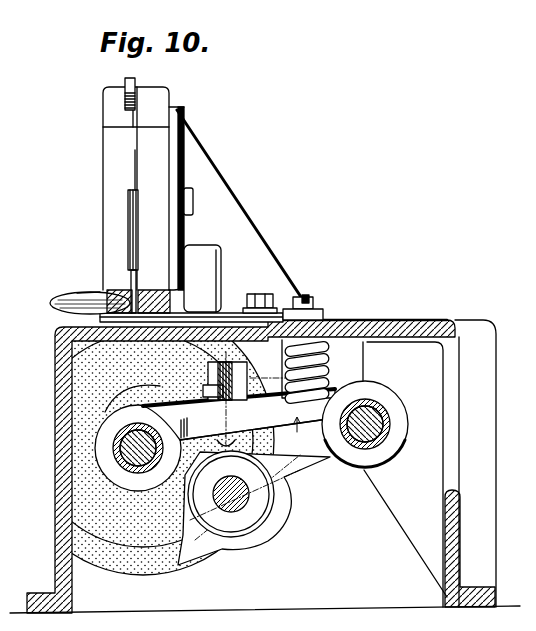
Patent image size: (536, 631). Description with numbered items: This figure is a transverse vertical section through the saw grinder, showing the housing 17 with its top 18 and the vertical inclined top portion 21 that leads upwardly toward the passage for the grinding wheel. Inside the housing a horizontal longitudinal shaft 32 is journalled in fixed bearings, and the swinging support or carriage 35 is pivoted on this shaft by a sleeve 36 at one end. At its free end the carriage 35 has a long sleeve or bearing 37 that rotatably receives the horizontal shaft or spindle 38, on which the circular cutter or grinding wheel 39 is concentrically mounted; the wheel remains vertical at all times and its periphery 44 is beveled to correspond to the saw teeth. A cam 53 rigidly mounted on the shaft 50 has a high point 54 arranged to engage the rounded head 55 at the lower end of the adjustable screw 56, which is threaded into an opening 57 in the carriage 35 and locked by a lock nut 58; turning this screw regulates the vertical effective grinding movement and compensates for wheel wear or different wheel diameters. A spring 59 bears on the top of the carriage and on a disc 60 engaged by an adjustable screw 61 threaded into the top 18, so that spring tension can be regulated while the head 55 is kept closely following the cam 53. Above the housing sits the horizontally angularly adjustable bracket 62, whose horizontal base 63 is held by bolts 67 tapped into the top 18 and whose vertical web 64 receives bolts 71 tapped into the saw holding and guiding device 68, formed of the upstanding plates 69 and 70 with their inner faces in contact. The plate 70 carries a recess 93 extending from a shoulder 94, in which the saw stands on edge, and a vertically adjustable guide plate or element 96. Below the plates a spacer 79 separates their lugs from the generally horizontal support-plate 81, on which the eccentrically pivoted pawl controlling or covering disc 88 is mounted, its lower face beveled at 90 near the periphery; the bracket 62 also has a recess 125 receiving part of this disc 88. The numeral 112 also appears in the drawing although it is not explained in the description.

The housing 17 is at (450, 525).
The top 18 is at (400, 320).
The vertical inclined top portion 21 is at (55, 352).
The horizontal longitudinal shaft 32 is at (373, 415).
The swinging support or carriage 35 is at (252, 441).
The sleeve 36 is at (370, 397).
The sleeve or bearing 37 is at (140, 480).
The shaft or spindle 38 is at (128, 462).
The cutter or grinding wheel 39 is at (123, 543).
The periphery 44 is at (153, 567).
The shaft 50 is at (237, 505).
The cam 53 is at (245, 522).
The high point 54 is at (296, 487).
The rounded head 55 is at (262, 452).
The adjustable screw 56 is at (239, 414).
The opening 57 is at (238, 382).
The lock nut 58 is at (218, 372).
The spring 59 is at (318, 368).
The disc 60 is at (333, 340).
The adjustable screw 61 is at (300, 318).
The horizontally angularly adjustable bracket 62 is at (253, 211).
The horizontal base 63 is at (267, 316).
The vertical web 64 is at (178, 232).
The bolts 67 is at (262, 298).
The saw holding and guiding device 68 is at (103, 197).
The upstanding plate 69 is at (153, 167).
The upstanding plate 70 is at (125, 163).
The bolts 71 is at (190, 203).
The spacer 79 is at (110, 320).
The support-plate 81 is at (110, 330).
The pawl controlling or covering disc 88 is at (96, 283).
The beveled lower face 90 is at (67, 305).
The recess 93 is at (132, 220).
The shoulder 94 is at (132, 187).
The guide plate or element 96 is at (150, 62).
The ring 112 is at (77, 293).
The recess 125 is at (203, 260).